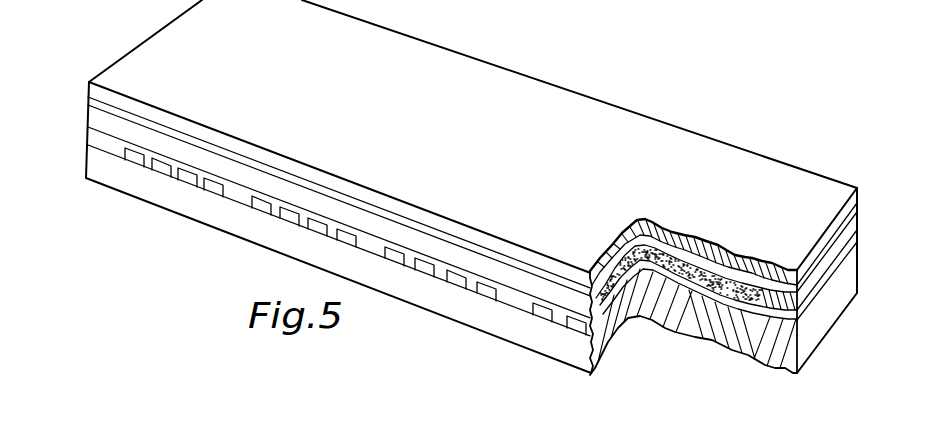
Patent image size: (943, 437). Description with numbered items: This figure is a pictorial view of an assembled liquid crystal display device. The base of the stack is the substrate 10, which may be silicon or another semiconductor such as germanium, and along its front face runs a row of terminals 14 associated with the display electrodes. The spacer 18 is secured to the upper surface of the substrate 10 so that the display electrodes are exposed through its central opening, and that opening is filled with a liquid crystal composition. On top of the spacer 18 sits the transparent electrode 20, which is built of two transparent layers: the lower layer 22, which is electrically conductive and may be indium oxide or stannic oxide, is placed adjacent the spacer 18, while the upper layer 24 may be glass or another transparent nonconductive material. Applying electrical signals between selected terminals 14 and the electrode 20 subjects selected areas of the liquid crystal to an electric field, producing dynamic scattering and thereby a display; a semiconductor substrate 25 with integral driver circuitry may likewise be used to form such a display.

The substrate 10 is at (515, 344).
The terminals 14 is at (185, 181).
The spacer 18 is at (92, 115).
The transparent electrode 20 is at (773, 162).
The lower layer 22 is at (860, 217).
The upper layer 24 is at (858, 188).
The semiconductor substrate 25 is at (413, 307).